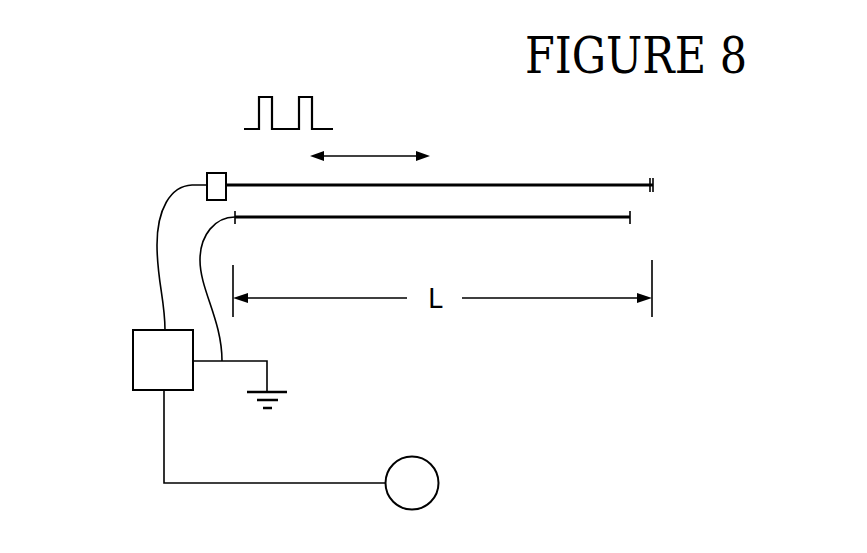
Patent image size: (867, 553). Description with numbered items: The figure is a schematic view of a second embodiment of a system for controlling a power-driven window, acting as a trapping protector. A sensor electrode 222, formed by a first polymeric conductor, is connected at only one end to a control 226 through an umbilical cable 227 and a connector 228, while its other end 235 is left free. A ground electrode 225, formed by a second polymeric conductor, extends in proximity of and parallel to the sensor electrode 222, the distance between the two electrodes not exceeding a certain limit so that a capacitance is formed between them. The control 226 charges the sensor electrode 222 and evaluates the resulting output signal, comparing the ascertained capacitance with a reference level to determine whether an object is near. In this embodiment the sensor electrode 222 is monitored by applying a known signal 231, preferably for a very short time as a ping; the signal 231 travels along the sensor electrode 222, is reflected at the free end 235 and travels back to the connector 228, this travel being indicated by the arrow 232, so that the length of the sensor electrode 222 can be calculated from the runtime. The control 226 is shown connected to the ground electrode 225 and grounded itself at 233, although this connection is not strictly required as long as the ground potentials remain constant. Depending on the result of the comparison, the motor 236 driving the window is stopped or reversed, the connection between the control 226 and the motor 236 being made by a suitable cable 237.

The sensor electrode 222 is at (528, 185).
The ground electrode 225 is at (560, 219).
The control 226 is at (140, 365).
The umbilical cable 227 is at (157, 250).
The connector 228 is at (207, 180).
The signal 231 is at (312, 113).
The arrow 232 is at (370, 156).
The ground 233 is at (267, 373).
The free end 235 is at (655, 185).
The motor 236 is at (438, 483).
The cable 237 is at (275, 483).